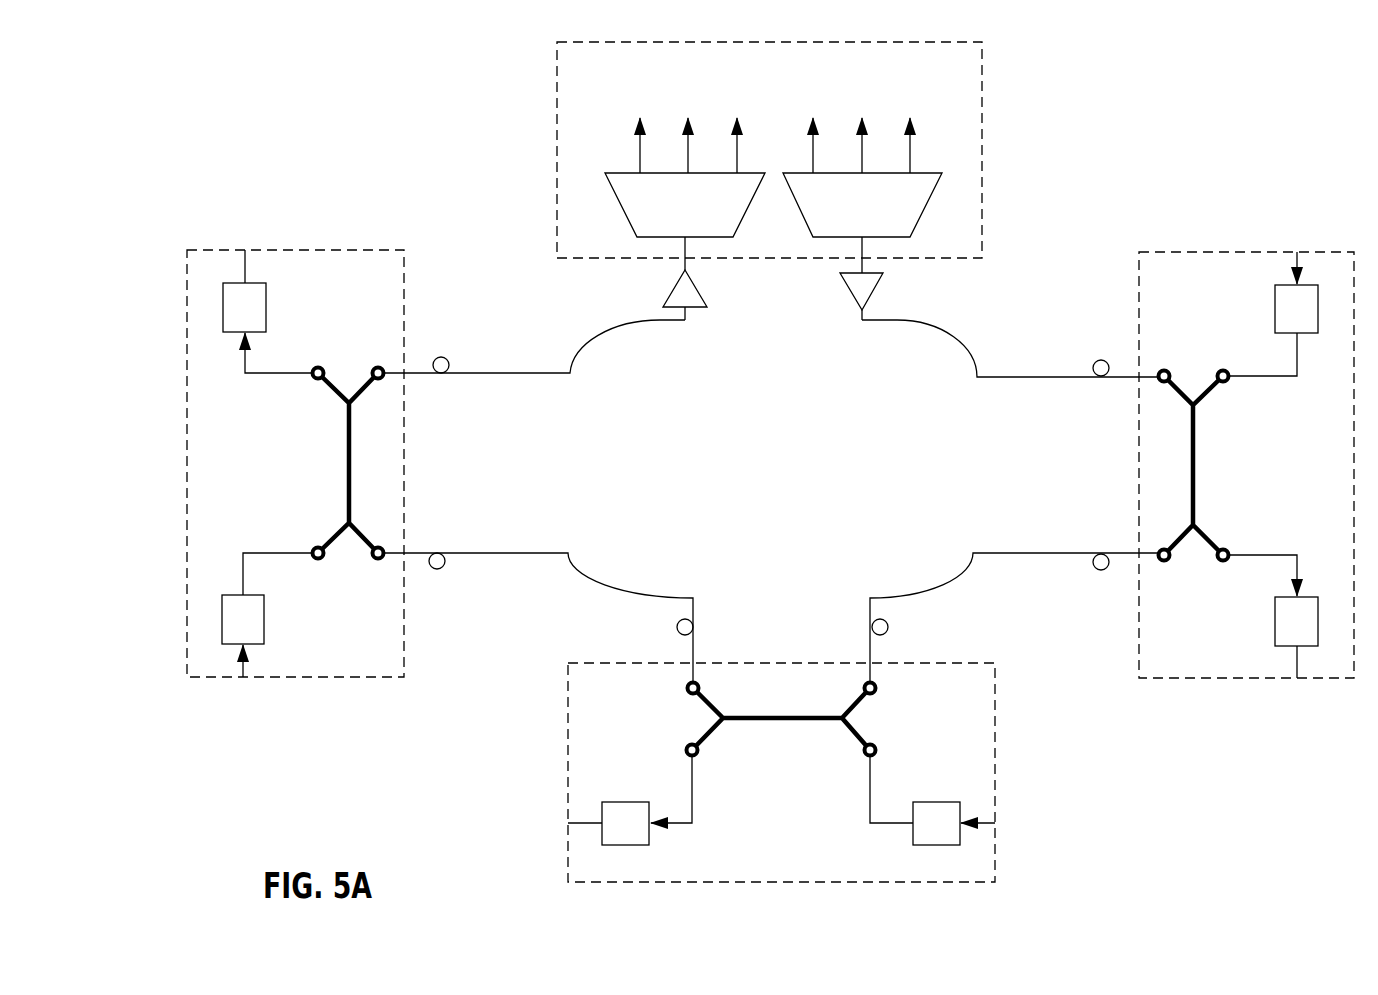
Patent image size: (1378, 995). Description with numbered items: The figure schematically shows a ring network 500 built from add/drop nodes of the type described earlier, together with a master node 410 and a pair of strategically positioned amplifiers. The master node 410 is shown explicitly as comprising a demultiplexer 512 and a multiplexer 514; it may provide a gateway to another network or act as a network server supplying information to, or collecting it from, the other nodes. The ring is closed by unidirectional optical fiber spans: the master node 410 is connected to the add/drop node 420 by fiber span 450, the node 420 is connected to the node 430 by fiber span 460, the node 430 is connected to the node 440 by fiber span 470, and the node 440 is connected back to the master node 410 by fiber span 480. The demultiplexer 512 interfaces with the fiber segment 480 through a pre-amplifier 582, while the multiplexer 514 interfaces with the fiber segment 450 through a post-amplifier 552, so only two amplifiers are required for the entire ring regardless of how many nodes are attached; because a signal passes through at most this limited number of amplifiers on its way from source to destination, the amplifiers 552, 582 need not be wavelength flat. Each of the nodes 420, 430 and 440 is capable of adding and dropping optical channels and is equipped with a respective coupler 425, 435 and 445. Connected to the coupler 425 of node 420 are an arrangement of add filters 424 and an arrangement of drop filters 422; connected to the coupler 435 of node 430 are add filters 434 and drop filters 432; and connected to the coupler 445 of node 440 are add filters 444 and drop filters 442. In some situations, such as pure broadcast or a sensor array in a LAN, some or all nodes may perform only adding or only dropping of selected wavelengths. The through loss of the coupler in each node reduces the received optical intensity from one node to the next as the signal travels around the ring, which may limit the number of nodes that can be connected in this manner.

The ring network 500 is at (1207, 113).
The master node 410 is at (929, 81).
The demultiplexer 512 is at (667, 233).
The multiplexer 514 is at (844, 233).
The pre-amplifier 582 is at (697, 308).
The post-amplifier 552 is at (857, 310).
The fiber span 480 is at (628, 328).
The fiber span 450 is at (908, 327).
The fiber span 470 is at (628, 592).
The fiber span 460 is at (910, 592).
The add/drop node 440 is at (362, 295).
The add filter 444 is at (227, 322).
The drop filter 442 is at (225, 635).
The coupler 445 is at (349, 458).
The add/drop node 420 is at (1145, 663).
The drop filter 422 is at (1278, 324).
The add filter 424 is at (1278, 637).
The coupler 425 is at (1190, 465).
The add/drop node 430 is at (580, 703).
The drop filter 432 is at (918, 838).
The add filter 434 is at (607, 838).
The coupler 435 is at (798, 713).